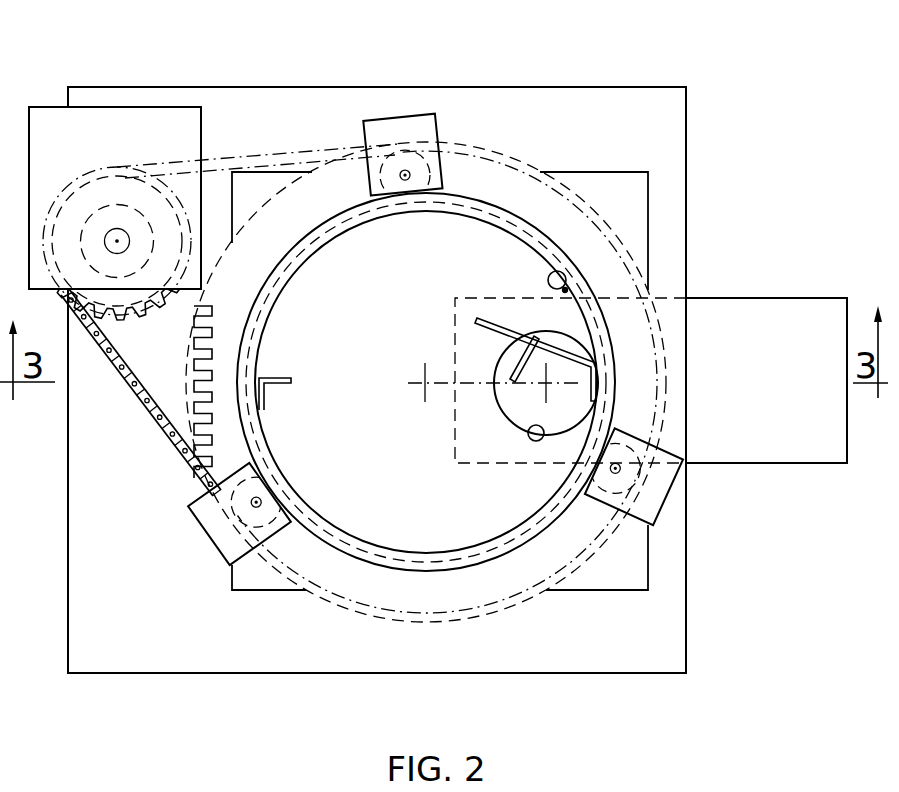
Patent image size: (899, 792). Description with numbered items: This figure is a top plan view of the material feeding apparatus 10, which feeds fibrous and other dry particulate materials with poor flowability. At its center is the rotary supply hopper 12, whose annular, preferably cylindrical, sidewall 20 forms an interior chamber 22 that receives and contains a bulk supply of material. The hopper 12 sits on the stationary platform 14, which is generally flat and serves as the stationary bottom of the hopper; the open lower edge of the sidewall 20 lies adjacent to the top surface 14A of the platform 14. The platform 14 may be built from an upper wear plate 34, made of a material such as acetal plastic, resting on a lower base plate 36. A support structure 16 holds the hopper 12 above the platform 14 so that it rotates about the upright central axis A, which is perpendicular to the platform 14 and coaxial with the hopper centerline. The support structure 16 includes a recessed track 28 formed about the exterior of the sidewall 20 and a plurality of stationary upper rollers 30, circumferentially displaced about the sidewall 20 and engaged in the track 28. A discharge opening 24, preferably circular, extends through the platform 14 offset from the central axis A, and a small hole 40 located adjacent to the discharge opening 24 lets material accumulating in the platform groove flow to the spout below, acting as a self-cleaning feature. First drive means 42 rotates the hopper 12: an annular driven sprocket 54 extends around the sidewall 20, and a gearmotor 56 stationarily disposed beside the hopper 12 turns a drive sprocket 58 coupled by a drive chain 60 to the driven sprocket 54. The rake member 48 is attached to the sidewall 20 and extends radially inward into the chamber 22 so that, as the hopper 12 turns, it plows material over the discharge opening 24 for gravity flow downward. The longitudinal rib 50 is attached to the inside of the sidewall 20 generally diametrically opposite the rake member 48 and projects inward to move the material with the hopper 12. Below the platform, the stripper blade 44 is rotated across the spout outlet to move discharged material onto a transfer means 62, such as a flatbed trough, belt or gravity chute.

The material feeding apparatus 10 is at (727, 94).
The rotary supply hopper 12 is at (555, 226).
The stationary platform 14 is at (688, 557).
The top surface 14A is at (640, 556).
The support structure 16 is at (378, 128).
The annular sidewall 20 is at (512, 203).
The interior chamber 22 is at (568, 272).
The discharge opening 24 is at (543, 435).
The recessed track 28 is at (464, 203).
The upper rollers 30 is at (397, 160).
The upper wear plate 34 is at (640, 575).
The lower base plate 36 is at (677, 638).
The small hole 40 is at (612, 397).
The first drive means 42 is at (125, 105).
The stripper blade 44 is at (512, 373).
The rake member 48 is at (502, 320).
The longitudinal rib 50 is at (273, 378).
The driven sprocket 54 is at (207, 393).
The gearmotor 56 is at (203, 133).
The drive sprocket 58 is at (128, 305).
The drive chain 60 is at (167, 427).
The transfer means 62 is at (768, 296).
The upright central axis A is at (421, 381).